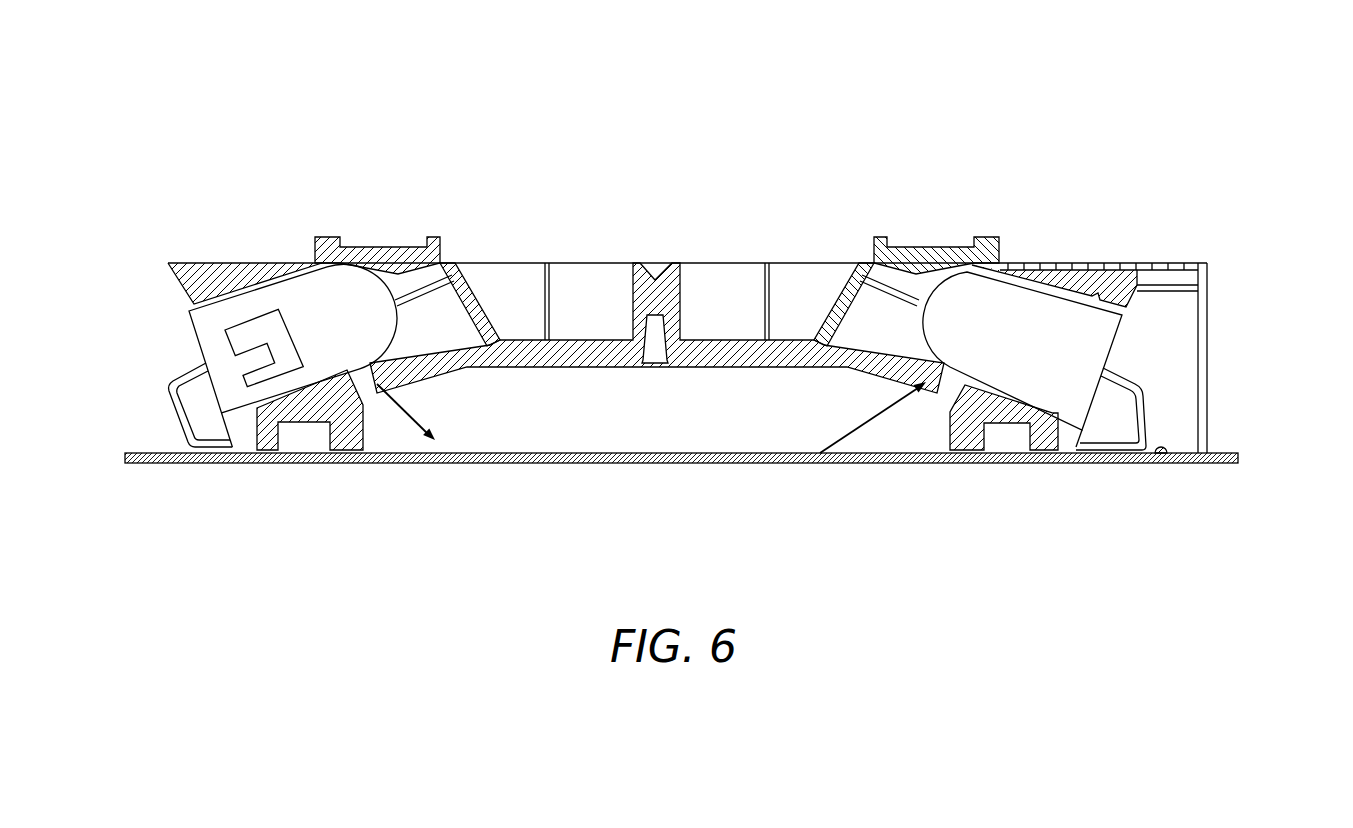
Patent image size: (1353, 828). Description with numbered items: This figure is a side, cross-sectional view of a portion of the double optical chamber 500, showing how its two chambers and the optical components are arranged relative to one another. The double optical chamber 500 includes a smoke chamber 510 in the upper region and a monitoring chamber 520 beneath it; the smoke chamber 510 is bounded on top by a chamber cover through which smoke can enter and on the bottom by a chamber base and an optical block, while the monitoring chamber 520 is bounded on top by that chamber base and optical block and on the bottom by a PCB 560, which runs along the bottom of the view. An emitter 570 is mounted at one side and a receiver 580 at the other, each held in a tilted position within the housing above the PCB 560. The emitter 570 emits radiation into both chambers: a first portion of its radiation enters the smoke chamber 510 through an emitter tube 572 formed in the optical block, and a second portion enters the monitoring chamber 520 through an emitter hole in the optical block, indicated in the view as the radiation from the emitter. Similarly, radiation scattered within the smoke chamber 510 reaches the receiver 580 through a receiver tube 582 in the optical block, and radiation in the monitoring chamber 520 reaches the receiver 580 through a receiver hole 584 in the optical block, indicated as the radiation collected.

The double optical chamber 500 is at (1232, 124).
The smoke chamber 510 is at (657, 307).
The monitoring chamber 520 is at (638, 403).
The PCB 560 is at (203, 464).
The emitter 570 is at (239, 349).
The emitter tube 572 is at (435, 310).
The receiver 580 is at (1115, 342).
The receiver tube 582 is at (905, 328).
The receiver hole 584 is at (375, 395).